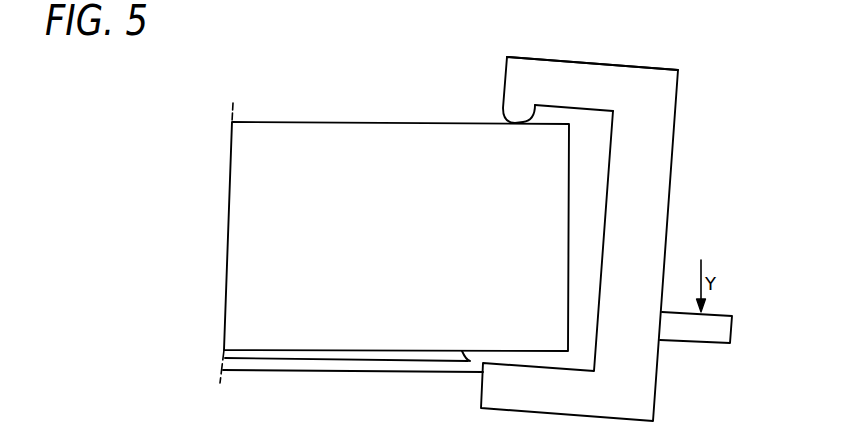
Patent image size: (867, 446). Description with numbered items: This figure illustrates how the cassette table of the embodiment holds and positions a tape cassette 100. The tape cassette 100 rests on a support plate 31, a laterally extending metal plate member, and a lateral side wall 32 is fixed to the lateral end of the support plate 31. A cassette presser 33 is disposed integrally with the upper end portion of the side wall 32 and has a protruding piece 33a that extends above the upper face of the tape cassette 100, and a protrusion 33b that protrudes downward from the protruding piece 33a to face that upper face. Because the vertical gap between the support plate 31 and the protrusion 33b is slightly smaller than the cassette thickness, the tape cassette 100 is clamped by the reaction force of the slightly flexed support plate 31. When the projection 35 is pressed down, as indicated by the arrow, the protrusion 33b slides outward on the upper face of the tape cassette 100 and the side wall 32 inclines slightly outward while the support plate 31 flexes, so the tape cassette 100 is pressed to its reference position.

The tape cassette 100 is at (342, 122).
The support plate 31 is at (347, 369).
The lateral side wall 32 is at (660, 180).
The cassette presser 33 is at (583, 63).
The protruding piece 33a is at (582, 87).
The protrusion 33b is at (502, 108).
The projection 35 is at (718, 323).